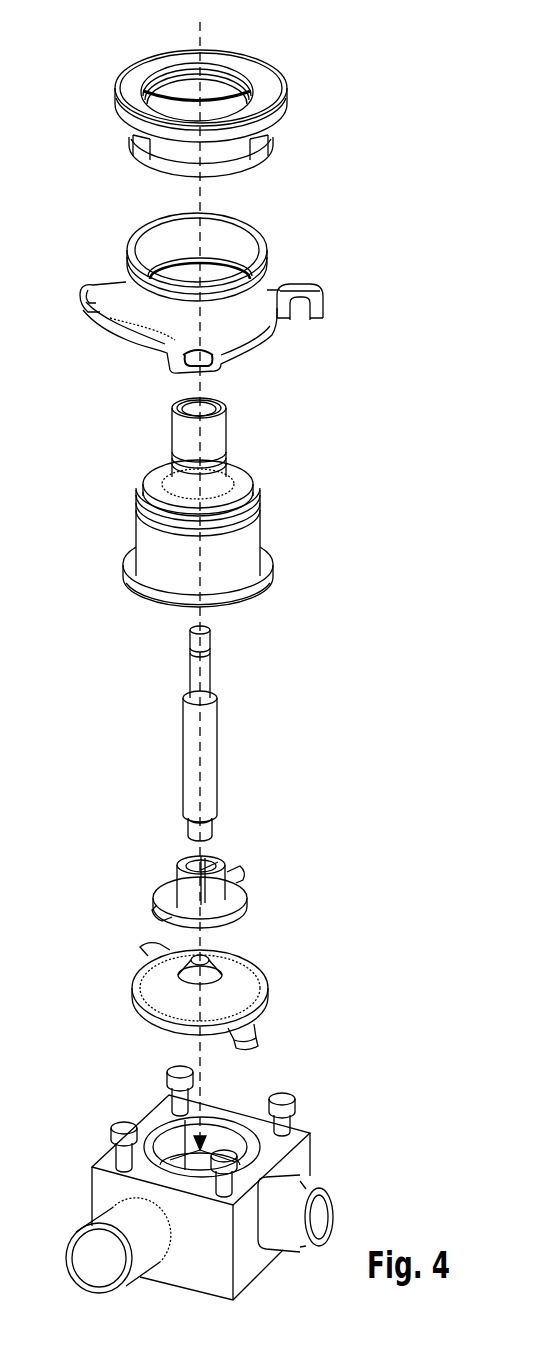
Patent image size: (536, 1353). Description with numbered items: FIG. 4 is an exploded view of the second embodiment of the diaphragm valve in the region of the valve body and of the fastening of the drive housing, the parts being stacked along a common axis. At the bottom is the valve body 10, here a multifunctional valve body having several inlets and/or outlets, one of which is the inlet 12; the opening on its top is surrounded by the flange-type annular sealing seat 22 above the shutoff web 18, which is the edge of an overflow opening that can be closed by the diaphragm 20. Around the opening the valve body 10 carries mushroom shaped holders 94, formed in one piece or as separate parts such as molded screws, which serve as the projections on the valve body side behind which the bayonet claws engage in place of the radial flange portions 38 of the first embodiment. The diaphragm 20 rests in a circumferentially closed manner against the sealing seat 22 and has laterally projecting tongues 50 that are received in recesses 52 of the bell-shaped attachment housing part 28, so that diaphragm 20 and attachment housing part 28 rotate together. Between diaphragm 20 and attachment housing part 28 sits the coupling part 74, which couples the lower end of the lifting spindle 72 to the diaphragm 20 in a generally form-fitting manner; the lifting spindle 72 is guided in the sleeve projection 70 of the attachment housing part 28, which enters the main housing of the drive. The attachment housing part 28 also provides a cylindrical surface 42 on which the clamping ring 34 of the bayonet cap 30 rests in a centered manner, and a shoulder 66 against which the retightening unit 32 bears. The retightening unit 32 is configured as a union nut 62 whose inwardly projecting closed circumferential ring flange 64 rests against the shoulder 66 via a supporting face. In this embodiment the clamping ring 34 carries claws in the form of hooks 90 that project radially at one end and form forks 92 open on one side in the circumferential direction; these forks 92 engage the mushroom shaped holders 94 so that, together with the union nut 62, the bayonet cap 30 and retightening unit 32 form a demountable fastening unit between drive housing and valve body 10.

The valve body 10 is at (212, 1181).
The inlet 12 is at (322, 1220).
The shutoff web 18 is at (217, 1145).
The diaphragm 20 is at (228, 996).
The annular sealing seat 22 is at (232, 1118).
The attachment housing part 28 is at (201, 522).
The bayonet cap 30 is at (245, 293).
The retightening unit 32 is at (237, 95).
The clamping ring 34 is at (262, 233).
The radial flange portions 38 is at (163, 1108).
The cylindrical surface 42 is at (147, 551).
The tongues 50 is at (253, 1033).
The recesses 52 is at (240, 598).
The union nut 62 is at (260, 88).
The ring flange 64 is at (232, 60).
The shoulder 66 is at (143, 503).
The sleeve projection 70 is at (215, 435).
The lifting spindle 72 is at (218, 732).
The coupling part 74 is at (243, 897).
The hooks 90 is at (308, 298).
The forks 92 is at (288, 312).
The mushroom shaped holders 94 is at (281, 1128).